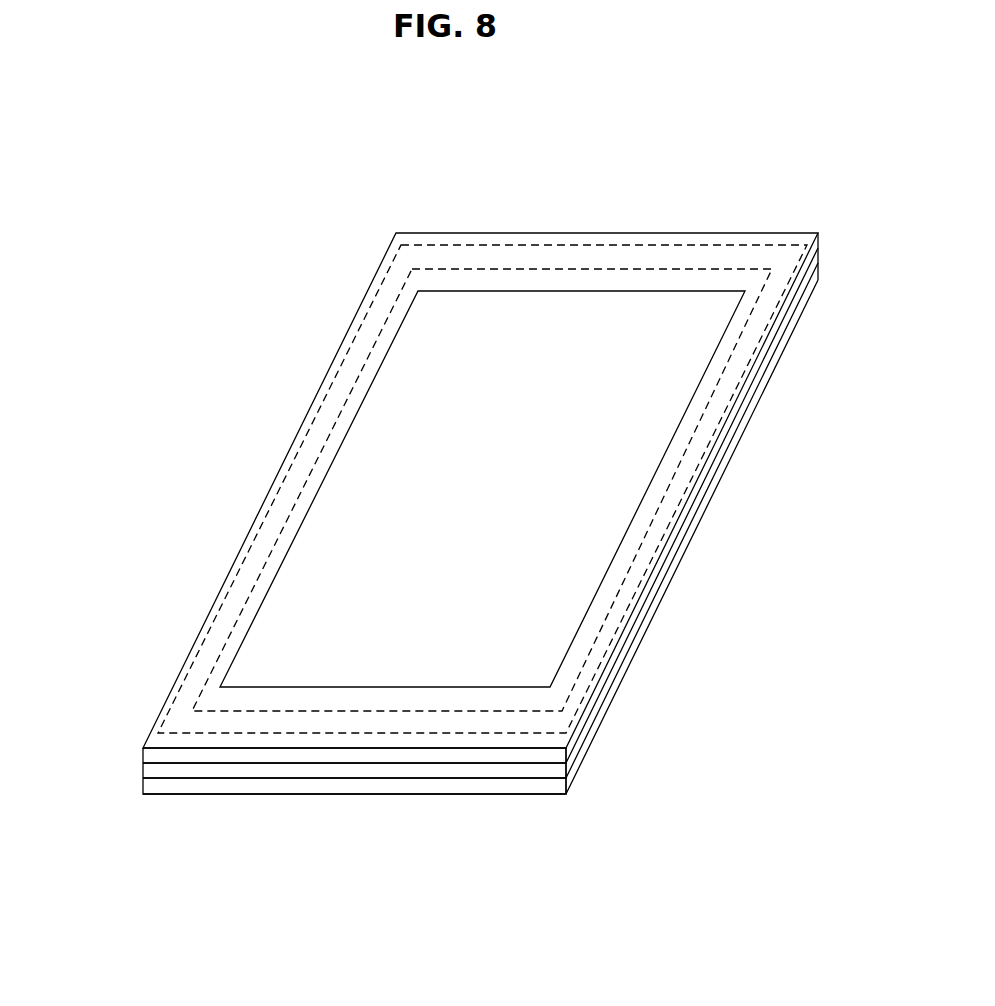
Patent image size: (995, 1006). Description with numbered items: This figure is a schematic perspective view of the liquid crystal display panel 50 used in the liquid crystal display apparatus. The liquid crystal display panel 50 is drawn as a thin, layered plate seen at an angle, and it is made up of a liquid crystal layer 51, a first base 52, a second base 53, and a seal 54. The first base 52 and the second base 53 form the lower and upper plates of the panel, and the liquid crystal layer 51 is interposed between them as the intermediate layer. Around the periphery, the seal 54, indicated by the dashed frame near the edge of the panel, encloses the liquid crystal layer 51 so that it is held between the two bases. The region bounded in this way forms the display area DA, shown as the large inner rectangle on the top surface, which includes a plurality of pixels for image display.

The liquid crystal display panel 50 is at (463, 474).
The liquid crystal layer 51 is at (563, 603).
The first base 52 is at (163, 792).
The second base 53 is at (163, 760).
The seal 54 is at (555, 770).
The display area DA is at (583, 483).